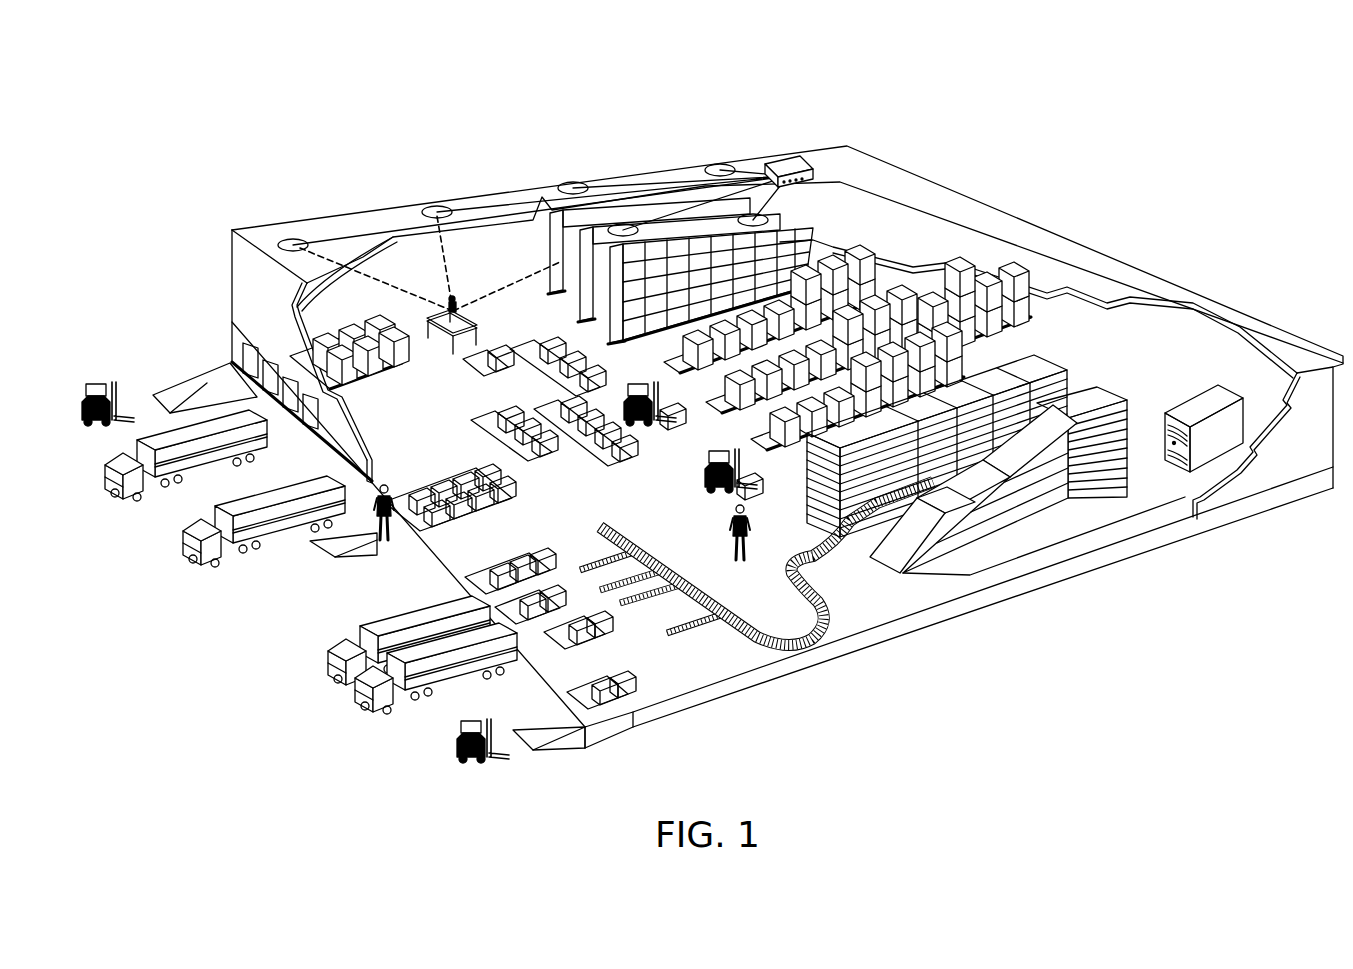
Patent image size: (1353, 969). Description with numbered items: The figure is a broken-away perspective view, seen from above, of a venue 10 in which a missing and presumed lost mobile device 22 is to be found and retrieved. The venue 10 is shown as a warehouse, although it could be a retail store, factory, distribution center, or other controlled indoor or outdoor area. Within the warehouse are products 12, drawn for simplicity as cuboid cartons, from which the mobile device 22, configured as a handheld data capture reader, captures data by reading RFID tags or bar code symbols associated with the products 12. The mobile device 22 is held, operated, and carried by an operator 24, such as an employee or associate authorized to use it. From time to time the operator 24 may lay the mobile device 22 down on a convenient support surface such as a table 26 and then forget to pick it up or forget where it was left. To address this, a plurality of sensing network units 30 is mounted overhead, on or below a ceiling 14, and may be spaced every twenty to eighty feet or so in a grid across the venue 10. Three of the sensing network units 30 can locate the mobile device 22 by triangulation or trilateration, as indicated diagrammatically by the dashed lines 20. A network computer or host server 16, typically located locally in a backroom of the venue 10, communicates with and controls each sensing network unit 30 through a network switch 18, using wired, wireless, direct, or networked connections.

The venue 10 is at (970, 192).
The products 12 is at (522, 504).
The ceiling 14 is at (830, 207).
The host server 16 is at (1231, 336).
The network switch 18 is at (636, 143).
The dashed lines 20 is at (383, 280).
The mobile device 22 is at (467, 309).
The operator 24 is at (726, 522).
The table 26 is at (448, 322).
The sensing network units 30 is at (757, 66).